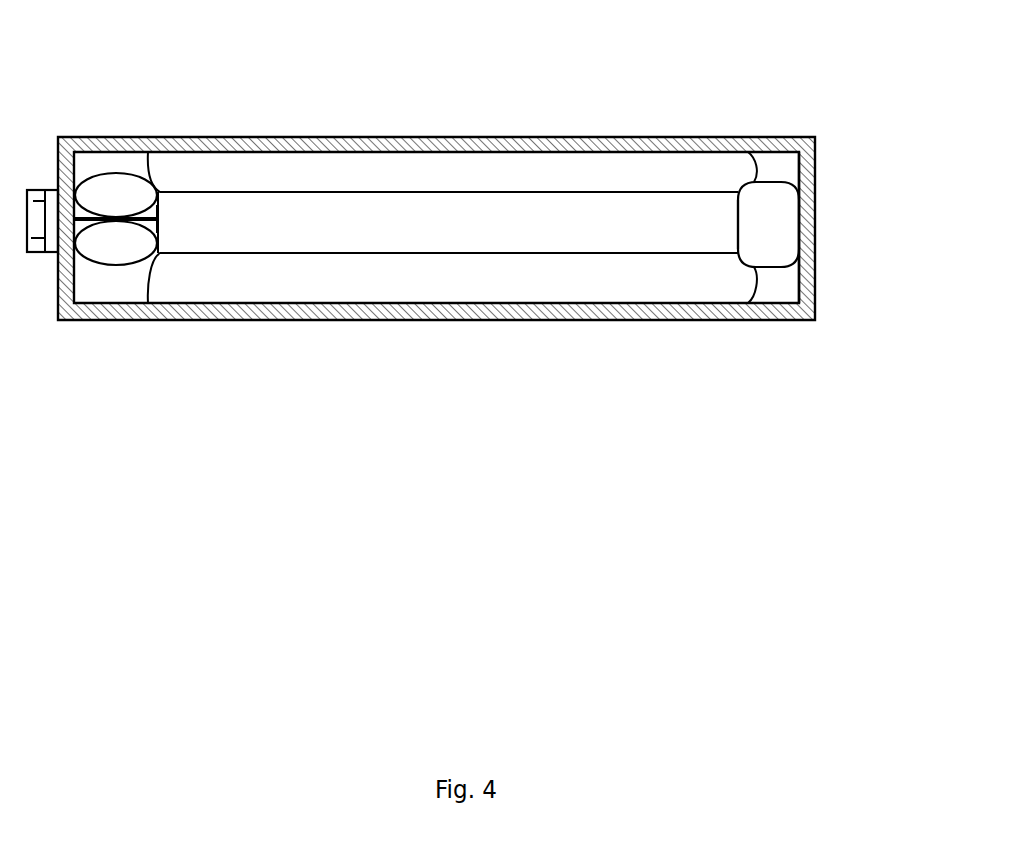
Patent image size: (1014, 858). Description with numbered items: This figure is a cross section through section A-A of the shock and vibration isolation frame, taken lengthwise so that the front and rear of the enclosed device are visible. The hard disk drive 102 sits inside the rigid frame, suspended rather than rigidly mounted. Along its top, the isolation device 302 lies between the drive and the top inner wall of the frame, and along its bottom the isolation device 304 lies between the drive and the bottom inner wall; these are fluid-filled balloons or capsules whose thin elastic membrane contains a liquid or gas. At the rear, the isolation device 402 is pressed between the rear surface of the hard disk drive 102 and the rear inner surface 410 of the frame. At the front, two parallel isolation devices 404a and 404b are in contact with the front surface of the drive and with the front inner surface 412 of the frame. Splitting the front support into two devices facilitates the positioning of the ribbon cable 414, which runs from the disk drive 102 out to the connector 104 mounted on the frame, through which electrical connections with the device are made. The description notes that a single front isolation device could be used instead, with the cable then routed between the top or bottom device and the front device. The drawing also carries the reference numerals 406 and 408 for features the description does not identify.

The connector 104 is at (43, 193).
The front isolation device 404a is at (117, 185).
The front isolation device 404b is at (98, 252).
The isolation device 302 is at (480, 182).
The hard disk drive 102 is at (472, 239).
The isolation device 304 is at (480, 293).
The isolation device 402 is at (768, 200).
The gap / feed slot 406 is at (158, 208).
The roller contact region 408 is at (735, 208).
The rear inner surface 410 is at (813, 255).
The front inner surface 412 is at (78, 288).
The ribbon cable 414 is at (120, 220).